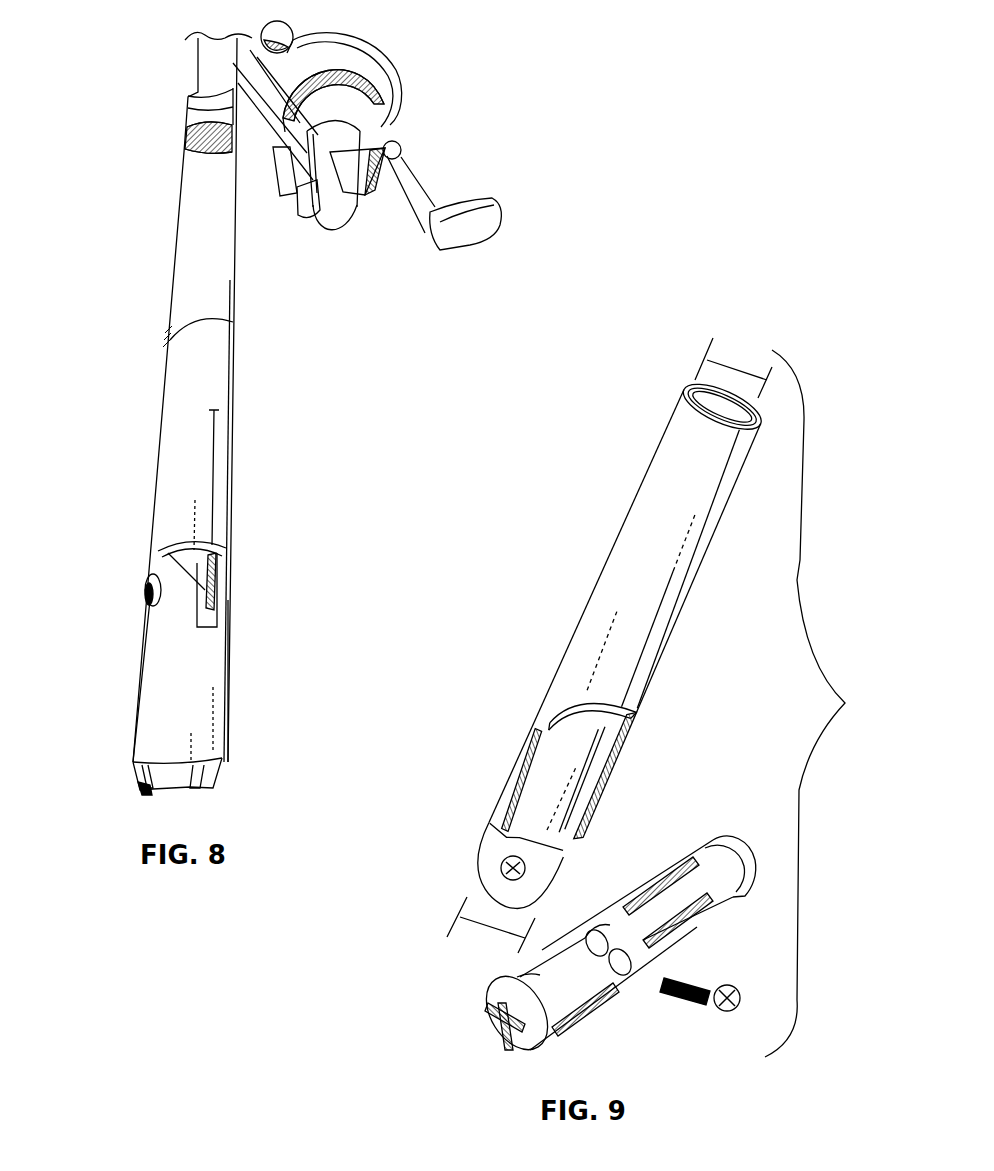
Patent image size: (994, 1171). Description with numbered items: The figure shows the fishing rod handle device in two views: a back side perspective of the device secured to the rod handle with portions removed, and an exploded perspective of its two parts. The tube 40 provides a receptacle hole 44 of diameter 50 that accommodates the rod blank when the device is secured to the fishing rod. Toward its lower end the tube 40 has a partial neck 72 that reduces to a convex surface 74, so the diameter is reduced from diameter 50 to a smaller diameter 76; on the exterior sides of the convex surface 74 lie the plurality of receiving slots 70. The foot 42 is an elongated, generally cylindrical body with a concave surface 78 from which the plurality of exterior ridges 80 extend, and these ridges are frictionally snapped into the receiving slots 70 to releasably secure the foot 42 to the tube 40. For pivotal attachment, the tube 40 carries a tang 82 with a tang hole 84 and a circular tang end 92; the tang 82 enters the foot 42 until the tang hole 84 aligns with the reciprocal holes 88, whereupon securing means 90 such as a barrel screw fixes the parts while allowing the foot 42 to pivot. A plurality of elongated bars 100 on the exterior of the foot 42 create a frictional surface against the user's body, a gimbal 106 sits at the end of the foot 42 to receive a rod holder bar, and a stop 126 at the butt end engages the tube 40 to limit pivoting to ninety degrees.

In FIG. 8, the tube 40 is at (215, 407).
In FIG. 9, the tube 40 is at (672, 497).
In FIG. 8, the foot 42 is at (203, 667).
In FIG. 9, the receptacle hole 44 is at (715, 403).
In FIG. 9, the diameter 50 is at (735, 370).
In FIG. 9, the plurality of receiving slots 70 is at (537, 738).
In FIG. 9, the partial neck 72 is at (640, 703).
In FIG. 9, the convex surface 74 is at (583, 777).
In FIG. 9, the smaller diameter 76 is at (467, 933).
In FIG. 9, the concave surface 78 is at (575, 925).
In FIG. 9, the plurality of exterior ridges 80 is at (657, 870).
In FIG. 8, the tang 82 is at (224, 568).
In FIG. 9, the tang 82 is at (492, 830).
In FIG. 9, the tang hole 84 is at (501, 864).
In FIG. 9, the reciprocal holes 88 is at (590, 920).
In FIG. 8, the securing means 90 is at (147, 590).
In FIG. 9, the securing means 90 is at (700, 1007).
In FIG. 9, the tang end 92 is at (493, 908).
In FIG. 9, the plurality of elongated bars 100 is at (697, 935).
In FIG. 8, the gimbal 106 is at (140, 793).
In FIG. 9, the gimbal 106 is at (497, 998).
In FIG. 9, the stop 126 is at (517, 977).